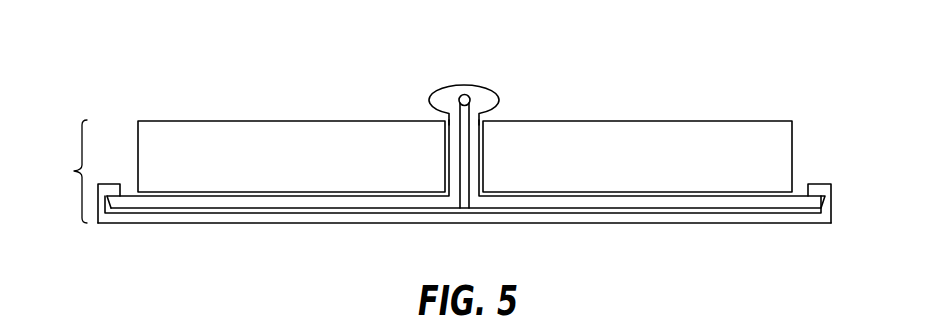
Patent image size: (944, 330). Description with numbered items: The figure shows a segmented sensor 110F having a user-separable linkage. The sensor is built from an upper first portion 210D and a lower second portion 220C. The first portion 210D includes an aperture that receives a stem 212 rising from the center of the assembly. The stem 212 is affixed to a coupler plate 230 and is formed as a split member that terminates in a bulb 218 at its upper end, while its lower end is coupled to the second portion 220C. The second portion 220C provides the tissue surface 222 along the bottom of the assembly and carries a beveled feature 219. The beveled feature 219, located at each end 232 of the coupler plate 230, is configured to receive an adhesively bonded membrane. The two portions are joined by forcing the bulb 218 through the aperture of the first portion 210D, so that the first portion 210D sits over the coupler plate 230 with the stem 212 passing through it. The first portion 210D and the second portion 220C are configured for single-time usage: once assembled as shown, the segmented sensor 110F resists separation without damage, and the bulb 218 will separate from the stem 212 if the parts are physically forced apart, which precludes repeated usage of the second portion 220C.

The segmented sensor 110F is at (58, 171).
The first portion 210D is at (293, 120).
The stem 212 is at (482, 155).
The bulb 218 is at (465, 84).
The beveled feature 219 is at (108, 198).
The second portion 220C is at (798, 224).
The tissue surface 222 is at (287, 223).
The coupler plate 230 is at (807, 190).
The end 232 is at (130, 192).